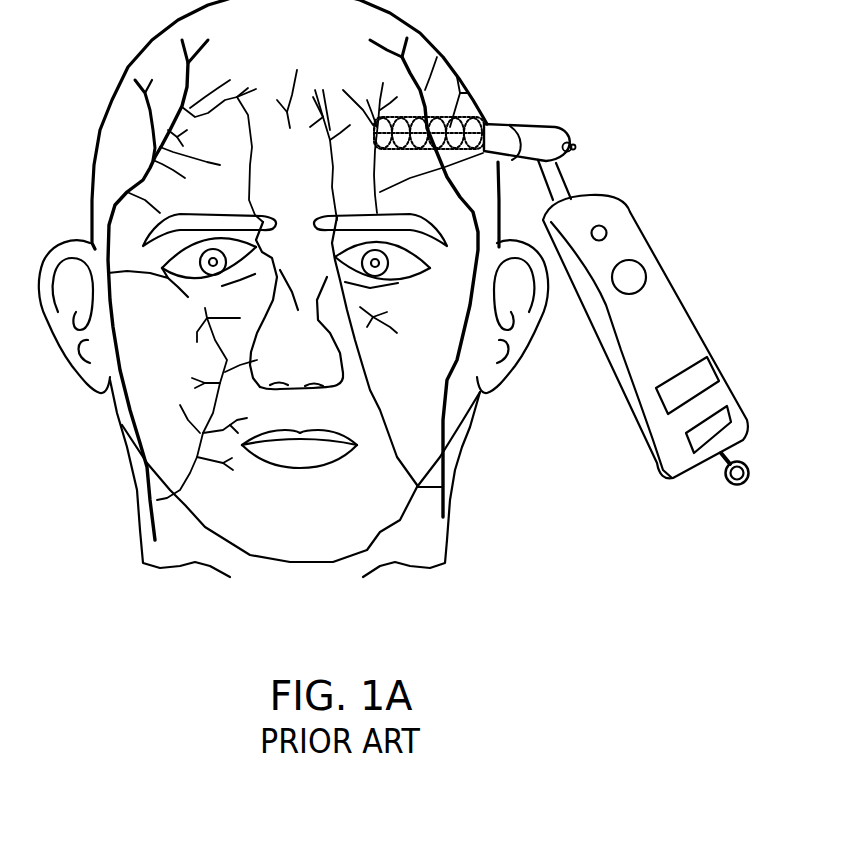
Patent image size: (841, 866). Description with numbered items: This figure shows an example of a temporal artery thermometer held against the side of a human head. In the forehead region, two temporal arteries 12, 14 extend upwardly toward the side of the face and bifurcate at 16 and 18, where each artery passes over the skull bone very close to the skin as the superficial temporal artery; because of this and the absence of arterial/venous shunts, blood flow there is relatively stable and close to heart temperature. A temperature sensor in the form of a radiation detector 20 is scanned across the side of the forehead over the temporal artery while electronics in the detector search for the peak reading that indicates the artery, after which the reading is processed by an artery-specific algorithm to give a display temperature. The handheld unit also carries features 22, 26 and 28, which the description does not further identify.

The temporal artery 12 is at (92, 218).
The temporal artery 14 is at (293, 389).
The bifurcation of temporal artery 16 is at (270, 289).
The bifurcation of temporal artery 18 is at (475, 158).
The radiation detector 20 is at (643, 331).
The indicator light 22 is at (632, 214).
The base end of device 26 is at (652, 470).
The button 28 is at (658, 263).